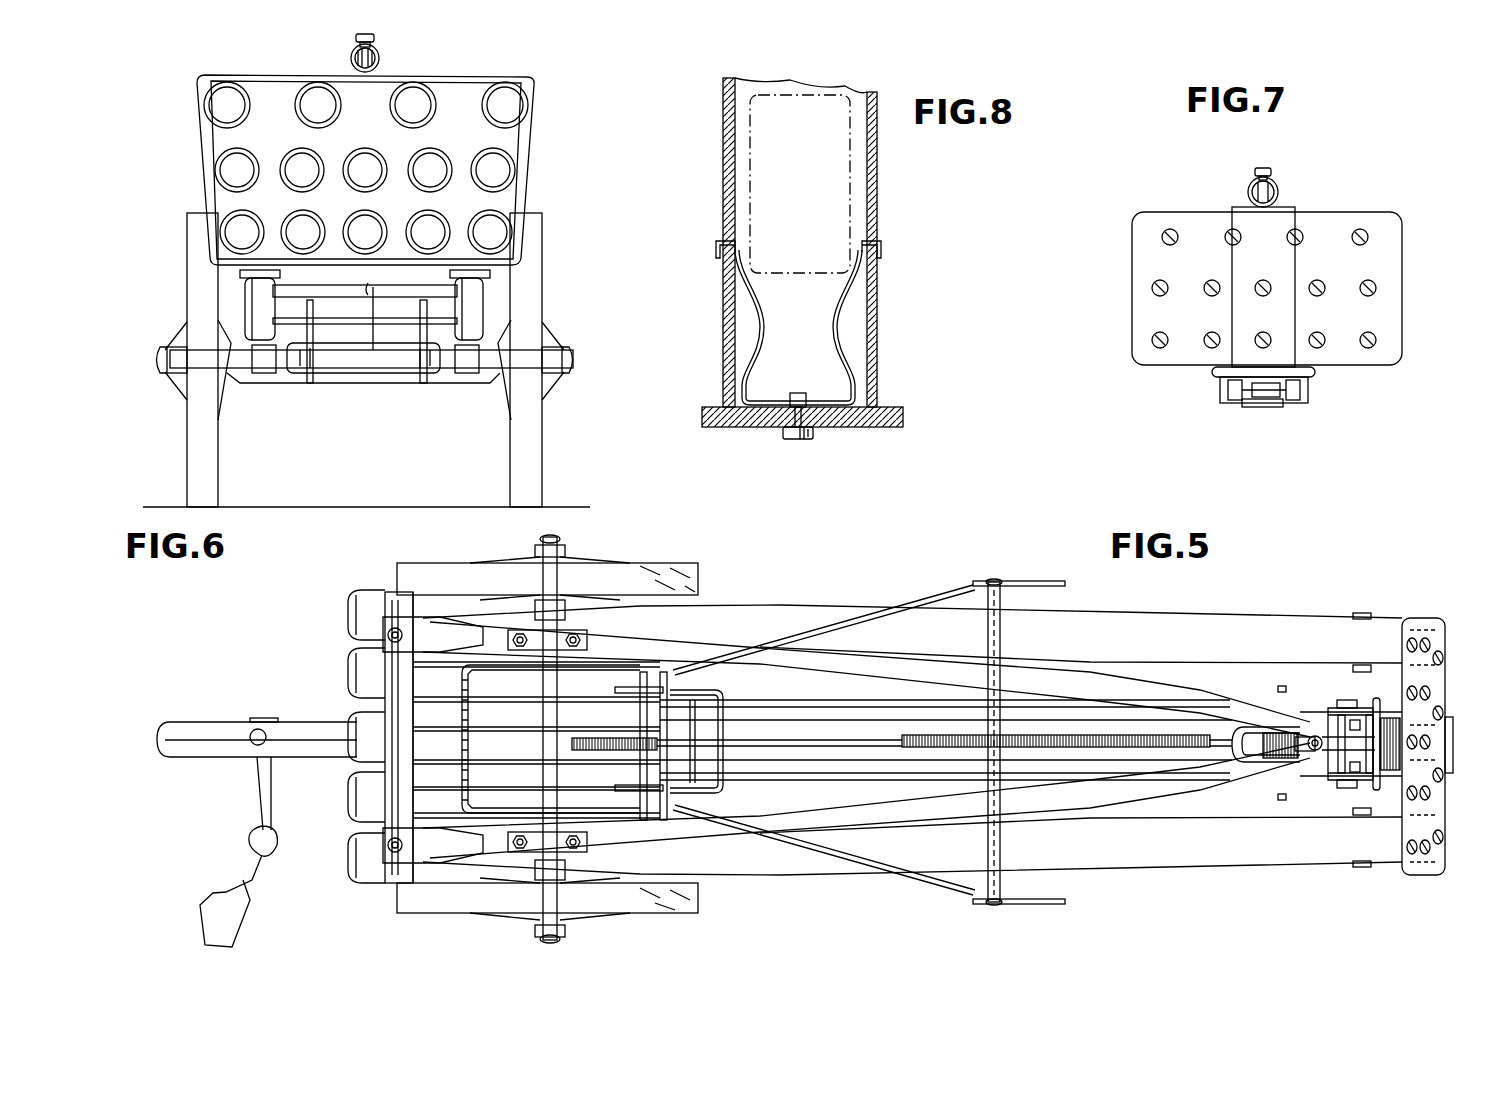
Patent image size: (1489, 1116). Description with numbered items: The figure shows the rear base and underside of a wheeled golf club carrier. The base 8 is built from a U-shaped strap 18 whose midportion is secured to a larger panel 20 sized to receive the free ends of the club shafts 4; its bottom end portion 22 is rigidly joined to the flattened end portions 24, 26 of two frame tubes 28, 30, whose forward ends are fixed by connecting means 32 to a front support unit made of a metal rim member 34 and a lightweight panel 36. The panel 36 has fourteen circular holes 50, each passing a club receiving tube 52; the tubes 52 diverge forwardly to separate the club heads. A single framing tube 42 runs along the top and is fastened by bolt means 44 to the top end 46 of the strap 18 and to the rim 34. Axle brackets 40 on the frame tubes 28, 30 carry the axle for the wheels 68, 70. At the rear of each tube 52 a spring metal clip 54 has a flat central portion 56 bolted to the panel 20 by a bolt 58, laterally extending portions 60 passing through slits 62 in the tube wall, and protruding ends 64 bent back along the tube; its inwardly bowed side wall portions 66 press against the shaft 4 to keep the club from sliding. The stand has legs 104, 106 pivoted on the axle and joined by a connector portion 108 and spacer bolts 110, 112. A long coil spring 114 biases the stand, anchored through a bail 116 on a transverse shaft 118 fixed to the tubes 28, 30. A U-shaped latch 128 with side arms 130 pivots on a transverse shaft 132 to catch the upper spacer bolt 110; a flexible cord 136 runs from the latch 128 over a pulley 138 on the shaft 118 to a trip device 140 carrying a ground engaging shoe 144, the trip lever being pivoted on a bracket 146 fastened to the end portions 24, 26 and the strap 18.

In FIG. 8, the shaft 4 is at (735, 112).
In FIG. 8, the base 8 is at (737, 438).
In FIG. 7, the base 8 is at (1386, 378).
In FIG. 5, the base 8 is at (1414, 609).
In FIG. 7, the U-shaped strap 18 is at (1251, 257).
In FIG. 5, the U-shaped strap 18 is at (1450, 718).
In FIG. 8, the panel 20 is at (902, 428).
In FIG. 5, the panel 20 is at (1430, 620).
In FIG. 7, the end portion 22 is at (1215, 364).
In FIG. 5, the end portion 22 is at (1395, 778).
In FIG. 7, the flattened end portion 24 is at (1222, 385).
In FIG. 5, the flattened end portion 24 is at (1336, 706).
In FIG. 7, the flattened end portion 26 is at (1315, 375).
In FIG. 5, the flattened end portion 26 is at (1332, 785).
In FIG. 5, the frame tube 28 is at (1103, 683).
In FIG. 5, the frame tube 30 is at (1122, 795).
In FIG. 5, the connecting means 32 is at (388, 632).
In FIG. 6, the rim member 34 is at (497, 81).
In FIG. 5, the rim member 34 is at (392, 712).
In FIG. 6, the panel 36 is at (449, 117).
In FIG. 5, the axle bracket 40 is at (560, 633).
In FIG. 6, the framing tube 42 is at (380, 52).
In FIG. 7, the framing tube 42 is at (1249, 187).
In FIG. 6, the bolt means 44 is at (355, 40).
In FIG. 7, the bolt means 44 is at (1269, 170).
In FIG. 7, the top end 46 is at (1295, 213).
In FIG. 6, the hole 50 is at (243, 113).
In FIG. 6, the club receiving tube 52 is at (320, 158).
In FIG. 8, the club receiving tube 52 is at (877, 335).
In FIG. 8, the spring metal clip 54 is at (740, 309).
In FIG. 8, the flat central portion 56 is at (760, 395).
In FIG. 8, the bolt 58 is at (812, 440).
In FIG. 7, the bolt 58 is at (1205, 340).
In FIG. 8, the laterally extending portion 60 is at (716, 240).
In FIG. 8, the slit 62 is at (881, 240).
In FIG. 5, the protruding end 64 is at (1362, 613).
In FIG. 8, the bowed side wall portion 66 is at (832, 332).
In FIG. 6, the wheel 68 is at (510, 447).
In FIG. 5, the wheel 68 is at (700, 575).
In FIG. 6, the wheel 70 is at (218, 447).
In FIG. 5, the wheel 70 is at (700, 905).
In FIG. 5, the leg portion 104 is at (1040, 582).
In FIG. 5, the leg portion 106 is at (1035, 905).
In FIG. 6, the connector portion 108 is at (360, 374).
In FIG. 5, the connector portion 108 is at (466, 800).
In FIG. 5, the spacer bolt 110 is at (645, 820).
In FIG. 5, the spacer bolt 112 is at (1001, 840).
In FIG. 5, the coil spring 114 is at (905, 735).
In FIG. 5, the bail 116 is at (1240, 728).
In FIG. 5, the transverse shaft 118 is at (1278, 690).
In FIG. 5, the latch 128 is at (750, 778).
In FIG. 5, the side arm 130 is at (722, 792).
In FIG. 5, the transverse shaft 132 is at (675, 840).
In FIG. 5, the flexible cord 136 is at (1305, 760).
In FIG. 5, the pulley 138 is at (1270, 760).
In FIG. 7, the trip device 140 is at (1275, 392).
In FIG. 5, the trip device 140 is at (1315, 735).
In FIG. 7, the ground engaging shoe 144 is at (1250, 408).
In FIG. 5, the ground engaging shoe 144 is at (1390, 718).
In FIG. 5, the bracket 146 is at (1376, 790).